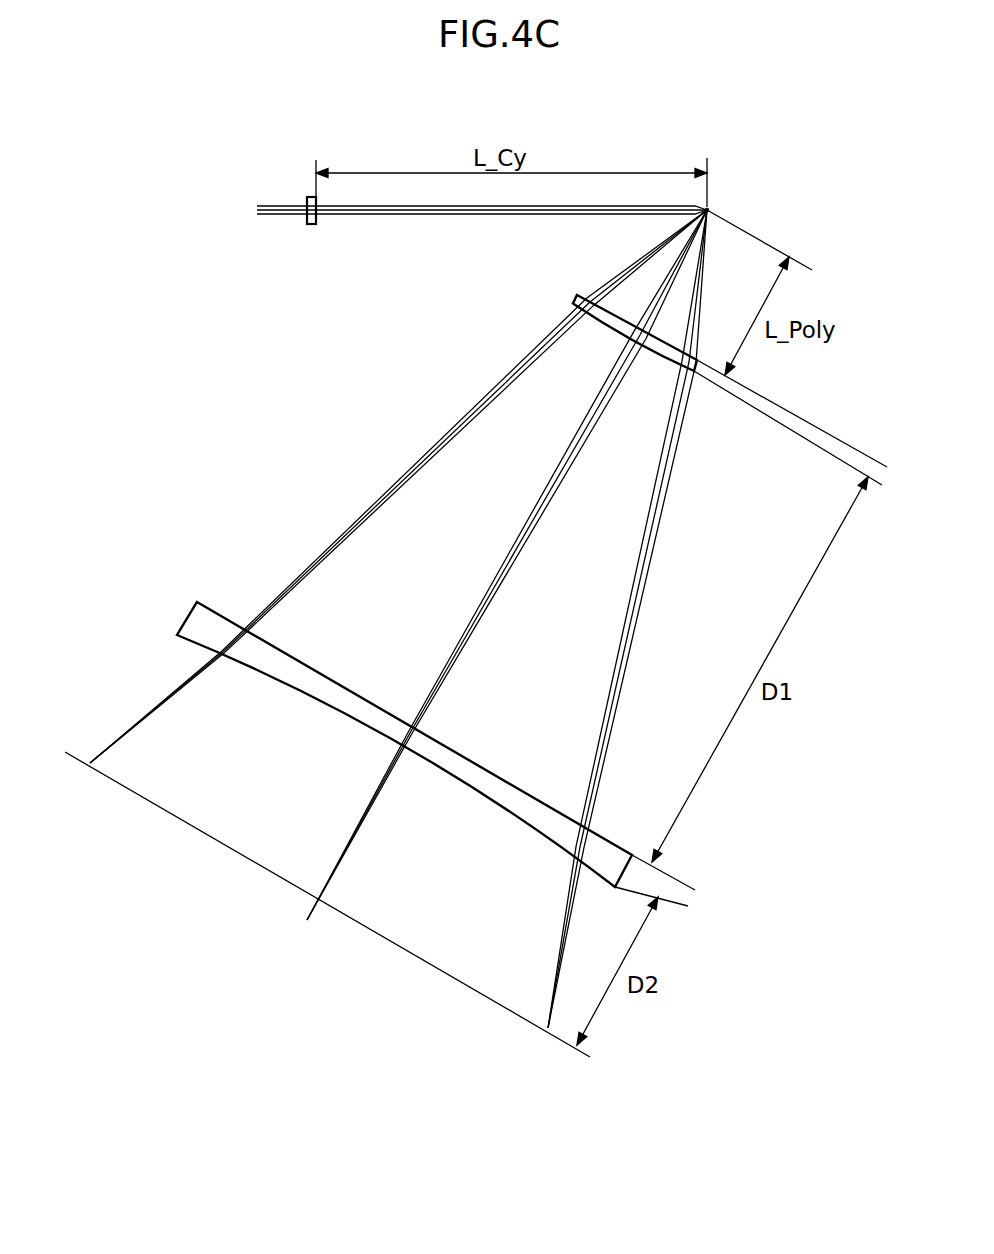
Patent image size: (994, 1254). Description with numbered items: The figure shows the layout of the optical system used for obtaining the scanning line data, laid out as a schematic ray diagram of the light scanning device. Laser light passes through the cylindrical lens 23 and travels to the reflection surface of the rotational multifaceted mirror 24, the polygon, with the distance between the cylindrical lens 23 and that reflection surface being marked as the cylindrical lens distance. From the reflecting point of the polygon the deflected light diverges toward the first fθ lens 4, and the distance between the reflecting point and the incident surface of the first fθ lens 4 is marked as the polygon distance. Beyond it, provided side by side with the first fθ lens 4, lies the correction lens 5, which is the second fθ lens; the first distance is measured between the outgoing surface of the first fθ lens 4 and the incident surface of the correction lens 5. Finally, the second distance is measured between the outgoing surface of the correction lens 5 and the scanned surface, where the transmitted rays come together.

The cylindrical lens 23 is at (305, 228).
The rotational multifaceted mirror 24 is at (720, 200).
The first fθ lens 4 is at (598, 323).
The correction lens 5 is at (285, 651).